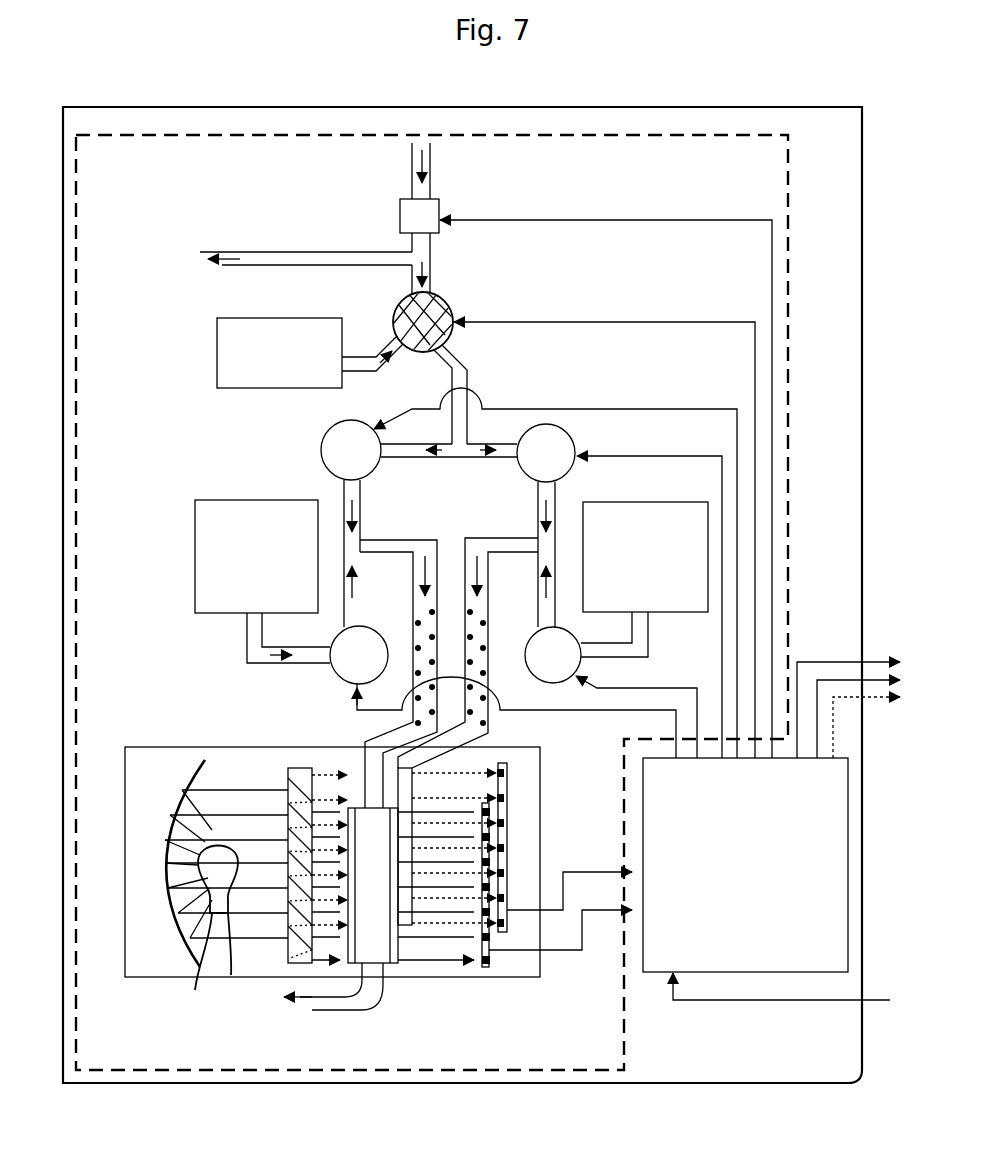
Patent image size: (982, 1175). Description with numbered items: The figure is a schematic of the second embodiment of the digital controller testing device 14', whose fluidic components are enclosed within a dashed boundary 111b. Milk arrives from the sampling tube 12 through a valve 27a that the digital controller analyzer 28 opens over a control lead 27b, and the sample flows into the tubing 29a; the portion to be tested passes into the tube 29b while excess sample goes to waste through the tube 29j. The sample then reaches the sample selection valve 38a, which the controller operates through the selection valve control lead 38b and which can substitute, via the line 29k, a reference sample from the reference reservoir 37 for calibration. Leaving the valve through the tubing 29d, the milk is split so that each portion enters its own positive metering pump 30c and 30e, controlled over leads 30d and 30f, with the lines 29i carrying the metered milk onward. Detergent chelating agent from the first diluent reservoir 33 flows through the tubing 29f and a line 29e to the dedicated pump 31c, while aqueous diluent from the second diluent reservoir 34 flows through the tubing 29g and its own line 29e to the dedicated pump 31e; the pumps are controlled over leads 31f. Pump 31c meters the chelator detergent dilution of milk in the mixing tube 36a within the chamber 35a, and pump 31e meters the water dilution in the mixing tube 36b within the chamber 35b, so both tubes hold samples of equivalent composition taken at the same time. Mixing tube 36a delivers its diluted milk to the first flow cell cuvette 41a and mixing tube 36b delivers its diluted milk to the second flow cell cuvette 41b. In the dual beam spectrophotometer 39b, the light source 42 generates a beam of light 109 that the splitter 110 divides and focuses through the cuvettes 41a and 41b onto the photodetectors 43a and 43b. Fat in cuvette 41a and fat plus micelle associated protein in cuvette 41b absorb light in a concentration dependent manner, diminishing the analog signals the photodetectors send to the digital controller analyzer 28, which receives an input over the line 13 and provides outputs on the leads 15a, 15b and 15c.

The digital controller testing device 14' is at (462, 561).
The fluidics enclosure (dashed) 111b is at (195, 133).
The sampling tube 12 is at (412, 177).
The valve 27a is at (400, 215).
The valve control line 27b is at (562, 220).
The tubing 29a is at (412, 250).
The tube 29j is at (240, 252).
The tube 29b is at (412, 289).
The sample selection valve 38a is at (395, 314).
The selection valve control lead 38b is at (624, 322).
The reference reservoir 37 is at (217, 364).
The reference conduit 29k is at (398, 357).
The tubing 29d is at (468, 375).
The positive displacement meter control line 30d is at (600, 409).
The pump 30c is at (322, 440).
The first diluent reservoir 33 is at (232, 500).
The conduit 29i is at (344, 490).
The dissolution chamber 35a is at (360, 545).
The mixing tube 36a is at (413, 637).
The pump 30e is at (524, 470).
The positive displacement meter control line 30f is at (692, 456).
The second diluent reservoir 34 is at (698, 504).
The dissolution chamber 35b is at (543, 548).
The mixing tube 36b is at (488, 604).
The pump 31c is at (330, 672).
The pump 31e is at (528, 648).
The reservoir conduit 29e is at (346, 622).
The tubing 29f is at (247, 650).
The tubing 29g is at (636, 664).
The pump control line 31f is at (570, 696).
The dual beam spectrophotometer 39b is at (190, 760).
The beam of light 109 is at (166, 873).
The light source 42 is at (230, 840).
The splitter 110 is at (300, 768).
The first flow cell cuvette 41a is at (398, 960).
The second flow cell cuvette 41b is at (594, 872).
The photodetector 43a is at (490, 962).
The photodetector 43b is at (510, 832).
The output line 15a is at (820, 662).
The output line 15b is at (850, 680).
The output line 15c is at (846, 706).
The digital controller analyzer 28 is at (770, 962).
The input line 13 is at (692, 1000).